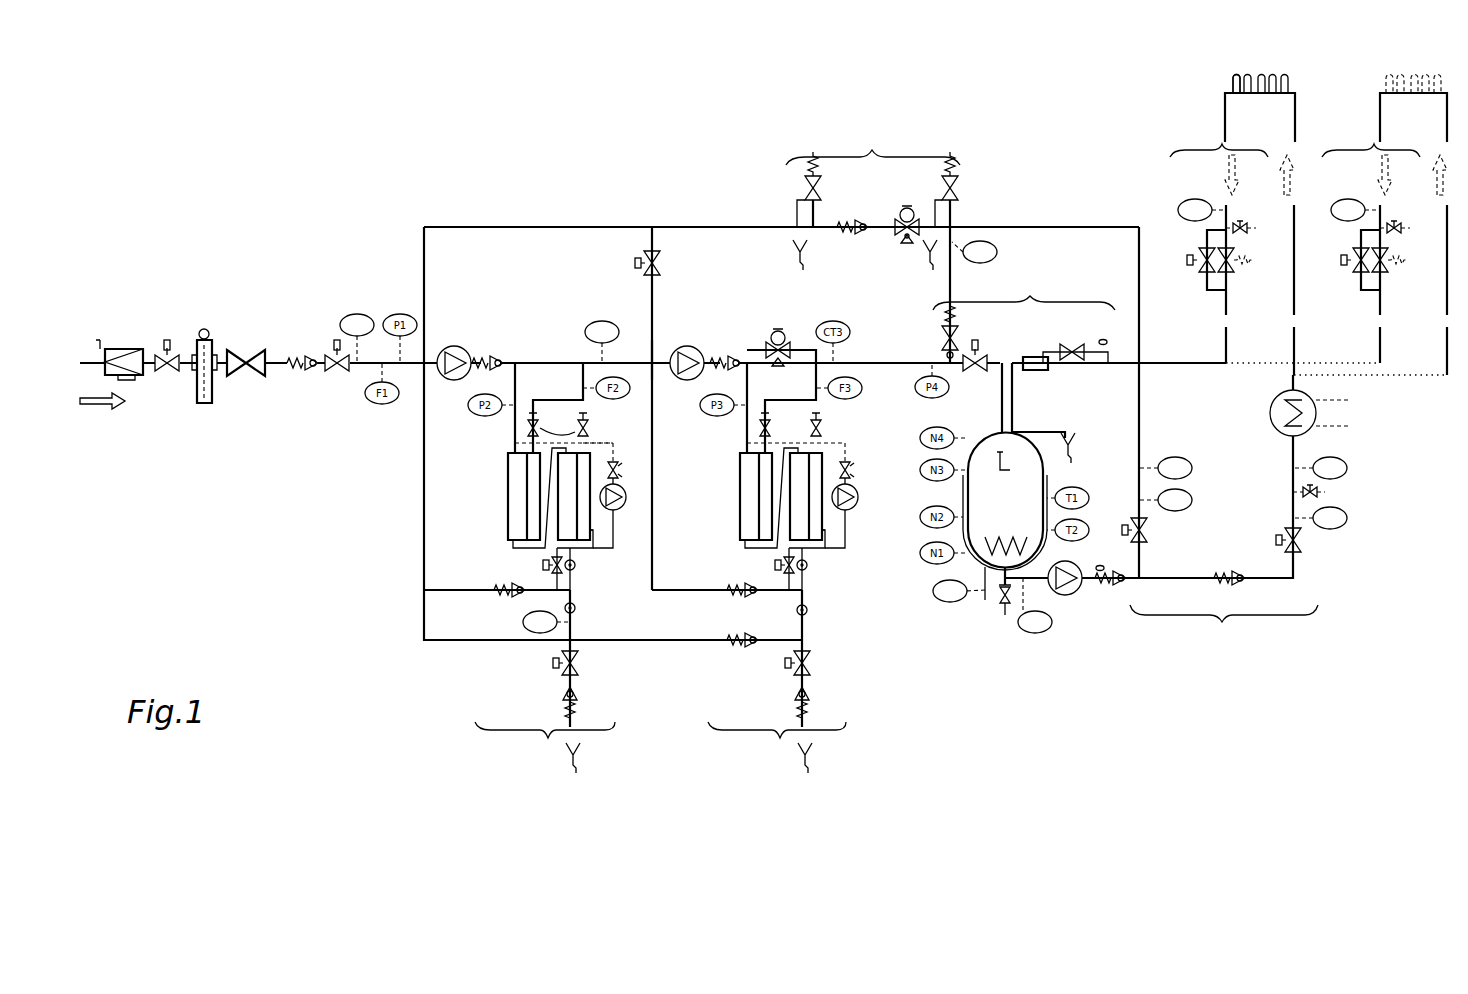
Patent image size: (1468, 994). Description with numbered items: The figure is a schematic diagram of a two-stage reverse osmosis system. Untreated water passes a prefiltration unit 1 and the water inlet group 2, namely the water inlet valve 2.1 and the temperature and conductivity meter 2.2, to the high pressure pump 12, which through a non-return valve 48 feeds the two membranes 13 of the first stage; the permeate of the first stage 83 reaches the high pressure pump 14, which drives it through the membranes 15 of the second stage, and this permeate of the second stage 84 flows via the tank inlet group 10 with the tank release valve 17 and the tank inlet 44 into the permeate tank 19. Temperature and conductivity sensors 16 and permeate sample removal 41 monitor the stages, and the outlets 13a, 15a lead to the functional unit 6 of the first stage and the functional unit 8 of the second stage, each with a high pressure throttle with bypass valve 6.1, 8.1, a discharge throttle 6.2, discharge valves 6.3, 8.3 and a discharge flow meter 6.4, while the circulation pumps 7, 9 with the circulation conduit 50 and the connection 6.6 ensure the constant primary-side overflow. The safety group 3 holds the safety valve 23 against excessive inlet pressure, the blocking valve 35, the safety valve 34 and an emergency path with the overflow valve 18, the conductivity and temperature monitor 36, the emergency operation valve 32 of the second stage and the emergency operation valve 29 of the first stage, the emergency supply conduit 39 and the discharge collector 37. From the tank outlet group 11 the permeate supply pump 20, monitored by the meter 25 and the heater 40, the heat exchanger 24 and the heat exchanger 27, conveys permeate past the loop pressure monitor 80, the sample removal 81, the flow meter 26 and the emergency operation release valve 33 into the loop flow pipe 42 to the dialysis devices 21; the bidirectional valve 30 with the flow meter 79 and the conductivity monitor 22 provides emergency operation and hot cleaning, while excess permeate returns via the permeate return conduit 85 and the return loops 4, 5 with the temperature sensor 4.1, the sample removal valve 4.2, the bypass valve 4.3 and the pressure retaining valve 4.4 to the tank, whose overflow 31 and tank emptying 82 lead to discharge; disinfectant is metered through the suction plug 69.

The prefiltration unit 1 is at (265, 318).
The water inlet group 2 is at (657, 205).
The water inlet valve 2.1 is at (337, 371).
The temperature and conductivity meter 2.2 is at (357, 314).
The safety group 3 is at (873, 142).
The return loop 1 4 is at (1232, 219).
The temperature sensor return loop 4.1 is at (1183, 200).
The sample removal valve 4.2 is at (1250, 222).
The bypass valve 4.3 is at (1187, 260).
The pressure retaining valve 4.4 is at (1258, 258).
The return loop 2 5 is at (1384, 225).
The functional unit 1st stage 6 is at (545, 747).
The high pressure throttle with bypass valve 6.1 is at (543, 565).
The discharge throttle 6.2 is at (576, 608).
The discharge valve 6.3 is at (578, 670).
The discharge flow meter 6.4 is at (523, 622).
The flow sensor connection 6.6 is at (583, 380).
The circulation pump 1st stage 7 is at (620, 508).
The functional unit 2nd stage 8 is at (777, 747).
The high pressure throttle with bypass valve 8.1 is at (775, 565).
The discharge valve 8.3 is at (810, 670).
The circulation pump 2nd stage 9 is at (852, 508).
The tank inlet group 10 is at (1024, 295).
The tank outlet group 11 is at (1224, 442).
The high pressure pump 1 12 is at (448, 350).
The membrane 1st stage 13 is at (507, 500).
The heat exchanger outlet 13a is at (593, 540).
The high pressure pump 2 14 is at (681, 350).
The membranes 2nd stage 15 is at (739, 500).
The heat exchanger outlet 15a is at (825, 540).
The temperature and conductivity sensors 16 is at (602, 321).
The tank release valve 17 is at (985, 355).
The overflow valve 18 is at (958, 335).
The permeate tank 19 is at (1005, 501).
The permeate supply pump 20 is at (1075, 592).
The dialysis devices 21 is at (1386, 86).
The conductivity monitor bypass branch 22 is at (1178, 457).
The safety valve water inlet pressure 23 is at (810, 178).
The heat exchanger tank 24 is at (1043, 478).
The temperature and conductivity meter tank outlet 25 is at (1027, 633).
The flow meter 26 is at (1347, 465).
The heat exchanger with temperature measuring and control device 27 is at (1340, 413).
The emergency operation valve 1st stage 29 is at (770, 345).
The bidirectional valve emergency operation and hot cleaning membranes 30 is at (1147, 535).
The overflow tank 31 is at (1035, 432).
The emergency operation valve 2nd stage 32 is at (660, 268).
The emergency operation release valve 33 is at (1300, 548).
The safety valve emergency operation and emptying valve tank 34 is at (958, 195).
The blocking valve emergency operation 35 is at (912, 210).
The conductivity and temperature monitor emergency operation 36 is at (990, 242).
The discharge collector 37 is at (918, 258).
The emergency supply conduit 39 is at (548, 227).
The heater 40 is at (985, 598).
The permeate sample removal 41 is at (588, 428).
The loop flow pipe 42 is at (1297, 340).
The tank inlet 44 is at (1000, 432).
The non-return valve 48 is at (490, 356).
The circulation conduit 50 is at (605, 443).
The disinfectant suction plug with contact 69 is at (1103, 340).
The flow meter hot cleaning membranes and bypass conduit monitor 79 is at (1192, 500).
The loop pressure monitor 80 is at (1340, 527).
The permeate removal block and sample permeate flow pipe 81 is at (1325, 492).
The tank emptying 82 is at (1003, 610).
The permeate 1st stage 83 is at (645, 355).
The permeate 2nd stage 84 is at (882, 363).
The permeate return conduit 85 is at (1165, 363).